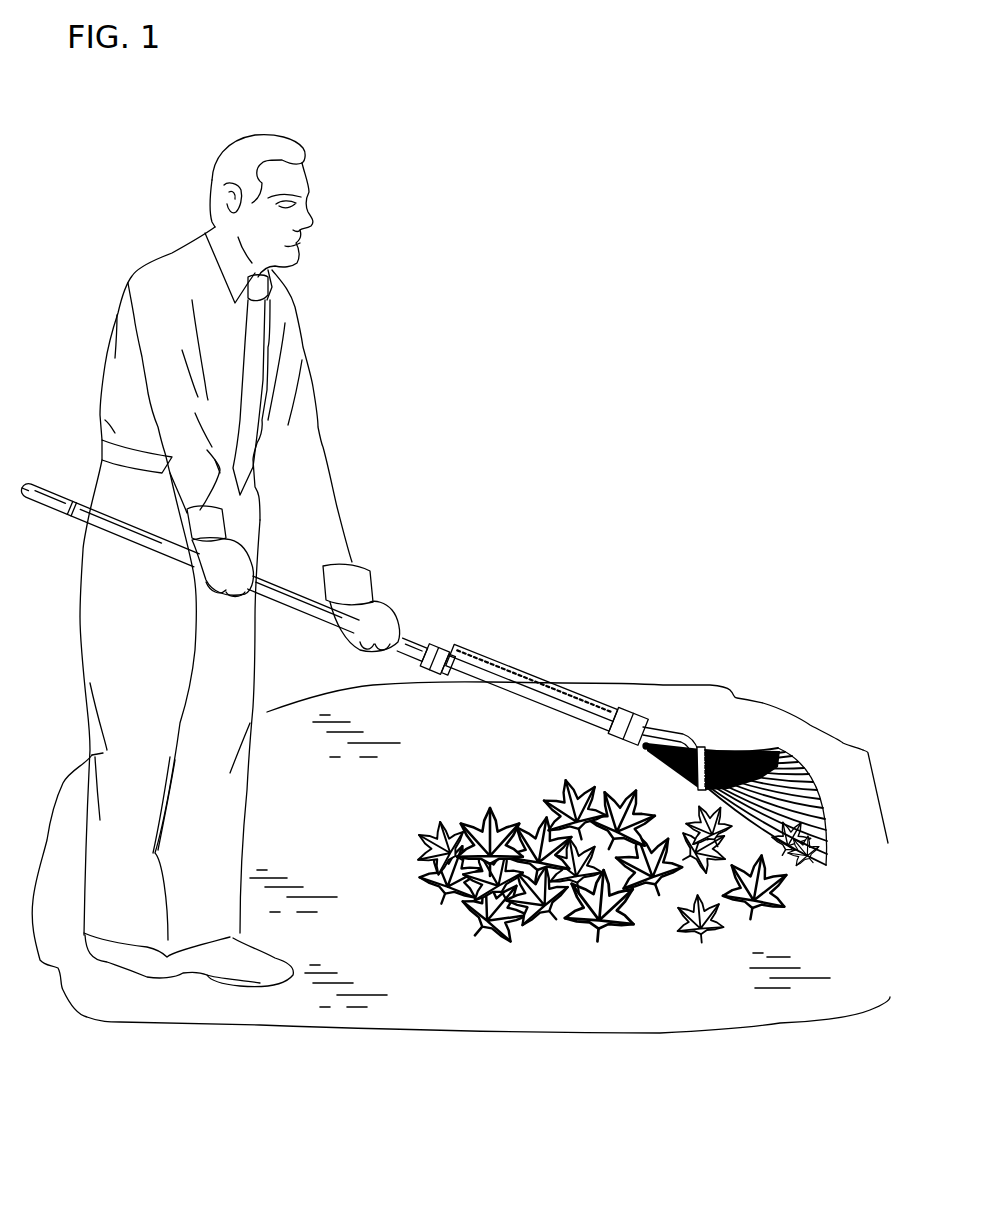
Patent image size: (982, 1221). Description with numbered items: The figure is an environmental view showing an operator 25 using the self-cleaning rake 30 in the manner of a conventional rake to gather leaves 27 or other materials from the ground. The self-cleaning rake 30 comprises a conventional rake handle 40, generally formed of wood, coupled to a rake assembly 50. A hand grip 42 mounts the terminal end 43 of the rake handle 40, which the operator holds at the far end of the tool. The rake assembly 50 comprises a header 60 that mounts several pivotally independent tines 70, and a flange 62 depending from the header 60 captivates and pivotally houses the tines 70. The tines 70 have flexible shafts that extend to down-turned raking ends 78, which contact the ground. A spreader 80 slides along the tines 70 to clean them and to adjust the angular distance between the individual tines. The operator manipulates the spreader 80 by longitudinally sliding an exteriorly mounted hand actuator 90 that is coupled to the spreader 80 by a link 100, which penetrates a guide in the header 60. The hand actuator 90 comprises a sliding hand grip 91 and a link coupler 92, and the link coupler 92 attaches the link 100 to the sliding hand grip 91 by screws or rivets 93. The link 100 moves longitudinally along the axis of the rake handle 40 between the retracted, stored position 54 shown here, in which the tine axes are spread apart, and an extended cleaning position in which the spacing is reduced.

The operator 25 is at (350, 186).
The leaves 27 is at (515, 955).
The self-cleaning rake 30 is at (437, 671).
The rake handle 40 is at (258, 543).
The hand grip 42 is at (53, 501).
The terminal end 43 is at (120, 526).
The rake assembly 50 is at (532, 686).
The retracted, stored position 54 is at (672, 722).
The header 60 is at (628, 706).
The flange 62 is at (638, 752).
The tines 70 is at (781, 820).
The raking ends 78 is at (810, 766).
The spreader 80 is at (752, 804).
The hand actuator 90 is at (25, 489).
The sliding hand grip 91 is at (424, 654).
The link coupler 92 is at (435, 659).
The screws or rivets 93 is at (448, 664).
The link 100 is at (560, 722).